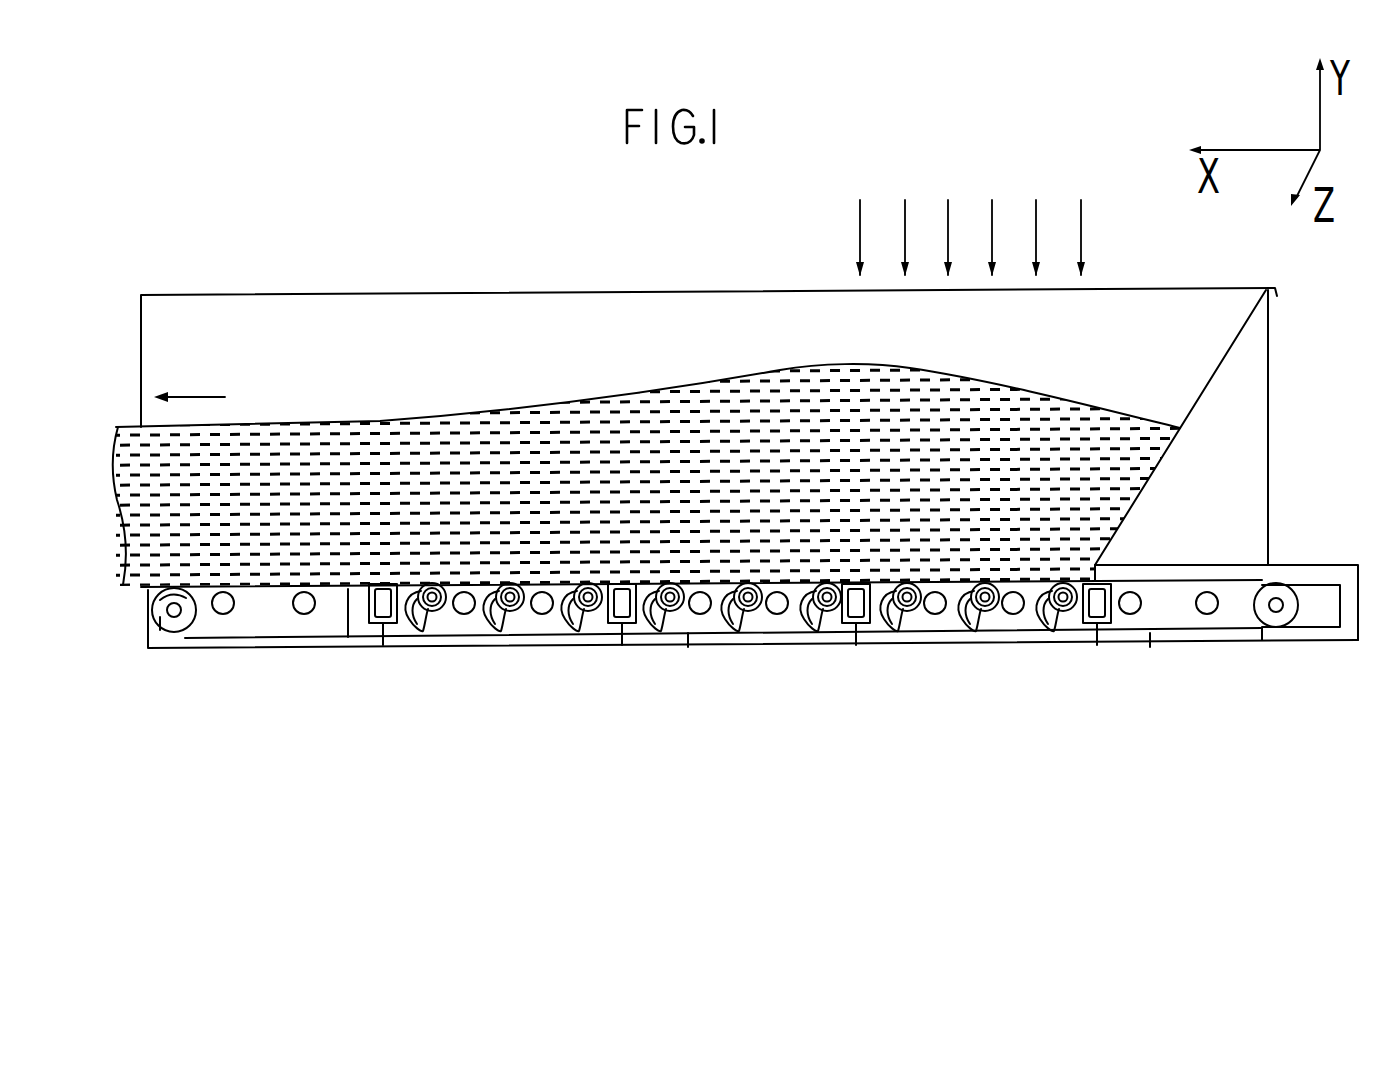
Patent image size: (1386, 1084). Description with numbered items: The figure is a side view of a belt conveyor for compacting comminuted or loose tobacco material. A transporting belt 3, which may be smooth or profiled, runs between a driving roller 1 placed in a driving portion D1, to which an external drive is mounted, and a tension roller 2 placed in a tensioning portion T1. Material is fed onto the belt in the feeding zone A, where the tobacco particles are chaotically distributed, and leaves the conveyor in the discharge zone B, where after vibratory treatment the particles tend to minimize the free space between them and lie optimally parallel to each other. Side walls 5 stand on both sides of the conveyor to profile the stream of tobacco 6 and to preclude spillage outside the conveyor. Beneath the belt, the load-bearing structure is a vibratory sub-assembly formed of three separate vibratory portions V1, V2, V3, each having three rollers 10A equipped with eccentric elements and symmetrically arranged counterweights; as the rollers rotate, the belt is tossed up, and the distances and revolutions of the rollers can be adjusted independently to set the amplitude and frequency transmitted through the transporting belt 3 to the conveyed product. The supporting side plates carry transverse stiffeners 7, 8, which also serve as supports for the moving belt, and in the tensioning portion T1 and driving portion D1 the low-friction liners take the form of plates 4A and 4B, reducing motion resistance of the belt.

The driving roller 1 is at (163, 645).
The tension roller 2 is at (1288, 612).
The transporting belt 3 is at (218, 645).
The low-friction plate 4A is at (1152, 608).
The low-friction plate 4B is at (347, 645).
The side walls 5 is at (460, 327).
The stream of tobacco 6 is at (349, 445).
The transverse stiffener 7 is at (610, 640).
The transverse stiffener 8 is at (688, 640).
The rollers 10A is at (1063, 613).
The driving portion D1 is at (264, 614).
The tensioning portion T1 is at (1195, 608).
The vibratory portion V1 is at (933, 632).
The vibratory portion V2 is at (733, 632).
The vibratory portion V3 is at (508, 632).
The feeding zone A is at (970, 206).
The discharge zone B is at (189, 363).